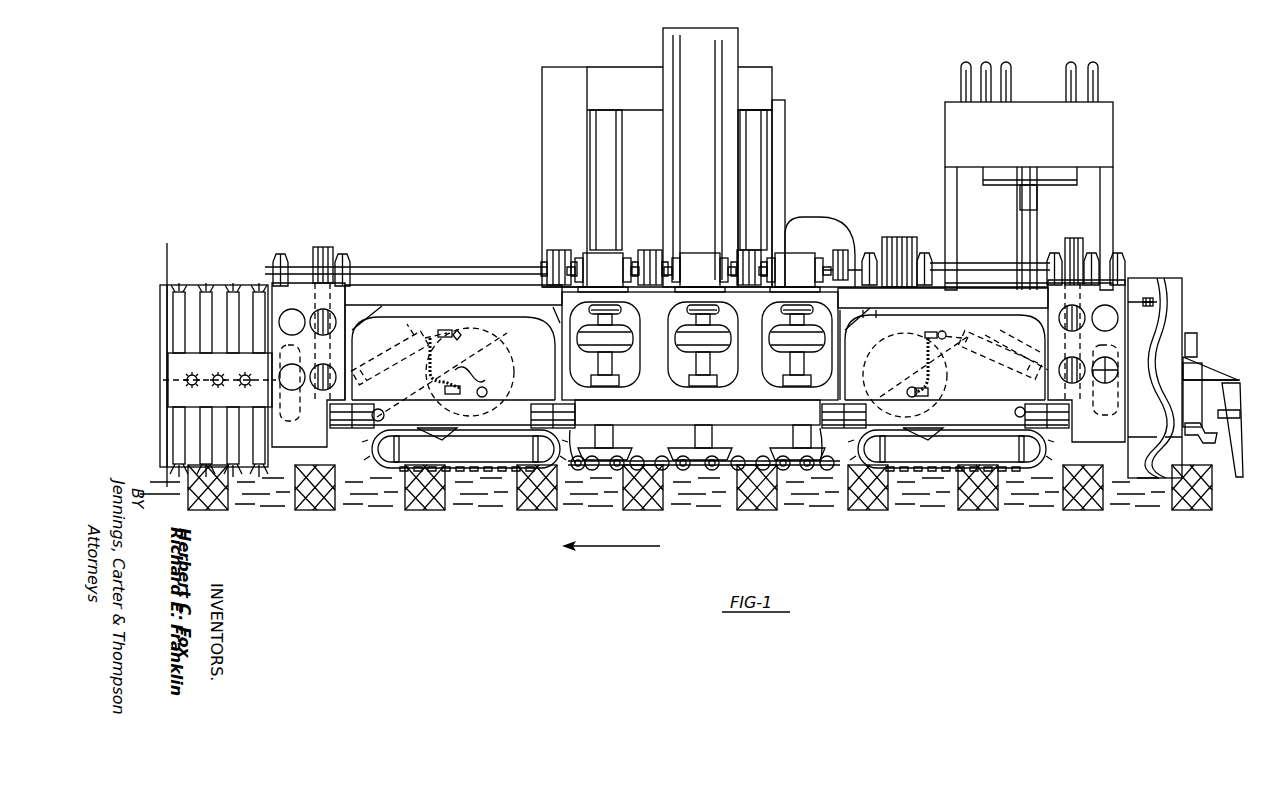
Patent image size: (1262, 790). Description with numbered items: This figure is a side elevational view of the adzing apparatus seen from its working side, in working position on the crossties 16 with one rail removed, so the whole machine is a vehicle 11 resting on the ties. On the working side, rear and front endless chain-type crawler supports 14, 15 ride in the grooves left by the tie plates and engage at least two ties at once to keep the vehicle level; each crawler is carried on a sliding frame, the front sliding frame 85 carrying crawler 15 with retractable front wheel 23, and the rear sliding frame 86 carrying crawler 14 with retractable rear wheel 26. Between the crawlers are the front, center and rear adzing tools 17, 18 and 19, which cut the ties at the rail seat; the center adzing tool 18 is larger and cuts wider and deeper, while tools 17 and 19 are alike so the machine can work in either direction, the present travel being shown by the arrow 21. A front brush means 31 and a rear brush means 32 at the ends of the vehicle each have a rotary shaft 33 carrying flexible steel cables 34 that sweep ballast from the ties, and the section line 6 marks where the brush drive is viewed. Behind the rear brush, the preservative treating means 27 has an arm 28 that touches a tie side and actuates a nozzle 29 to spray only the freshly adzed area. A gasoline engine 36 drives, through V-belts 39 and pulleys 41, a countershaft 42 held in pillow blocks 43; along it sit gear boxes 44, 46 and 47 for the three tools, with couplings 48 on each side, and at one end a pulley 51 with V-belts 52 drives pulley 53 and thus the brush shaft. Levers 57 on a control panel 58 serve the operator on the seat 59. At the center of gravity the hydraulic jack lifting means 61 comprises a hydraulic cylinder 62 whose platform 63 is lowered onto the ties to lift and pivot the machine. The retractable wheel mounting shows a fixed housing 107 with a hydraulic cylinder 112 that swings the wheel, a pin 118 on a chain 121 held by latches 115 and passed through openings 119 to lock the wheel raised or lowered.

The section line 6- 6 is at (167, 239).
The vehicle 11 is at (438, 270).
The rear crawler support 14 is at (1024, 456).
The front crawler support 15 is at (373, 454).
The crossties 16 is at (335, 510).
The front adzing tool 17 is at (606, 455).
The center adzing tool 18 is at (697, 466).
The rear adzing tool 19 is at (809, 466).
The arrow 21 is at (638, 546).
The retractable front wheel 23 is at (510, 334).
The retractable rear wheel 26 is at (883, 342).
The preservative treating means 27 is at (1214, 367).
The arm 28 is at (1222, 488).
The nozzle 29 is at (1202, 440).
The front brush means 31 is at (190, 331).
The rear brush means 32 is at (1182, 285).
The rotary shaft 33 is at (225, 386).
The flexible steel cables 34 is at (262, 458).
The gasoline engine 36 is at (757, 95).
The V-belts 39 is at (894, 240).
The pulleys 41 is at (925, 243).
The countershaft 42 is at (515, 266).
The pillow blocks 43 is at (286, 255).
The gear box 44 is at (613, 279).
The gear box 46 is at (710, 279).
The gear box 47 is at (805, 279).
The couplings 48 is at (561, 250).
The pulley 51 is at (341, 251).
The V-belts 52 is at (334, 247).
The pulley 53 is at (1110, 350).
The levers 57 is at (1010, 70).
The control panel 58 is at (1080, 130).
The seat 59 is at (1062, 190).
The hydraulic jack lifting means 61 is at (718, 50).
The hydraulic cylinder 62 is at (712, 98).
The platform 63 is at (749, 424).
The front sliding frame 85 is at (410, 343).
The rear sliding frame 86 is at (985, 334).
The housing 107 is at (545, 366).
The hydraulic cylinder 112 is at (1016, 345).
The latches 115 is at (484, 386).
The pin 118 is at (456, 335).
The openings 119 is at (489, 392).
The chain 121 is at (427, 376).